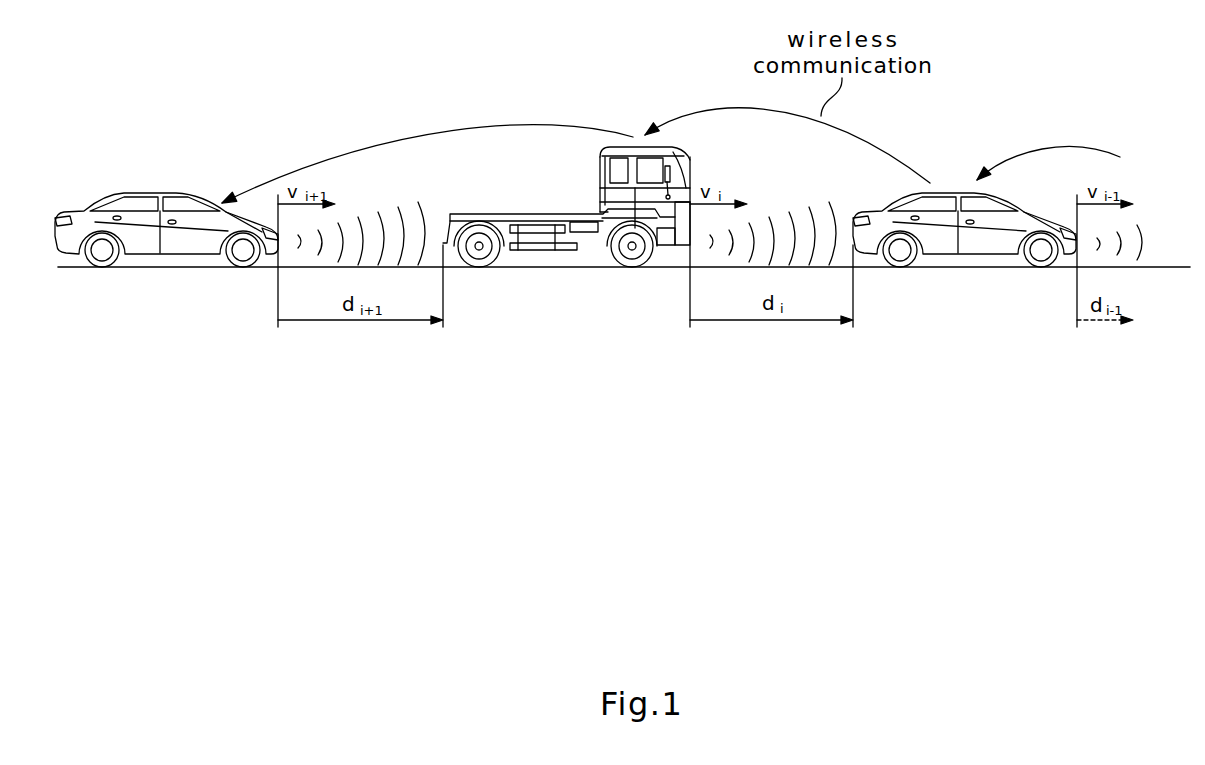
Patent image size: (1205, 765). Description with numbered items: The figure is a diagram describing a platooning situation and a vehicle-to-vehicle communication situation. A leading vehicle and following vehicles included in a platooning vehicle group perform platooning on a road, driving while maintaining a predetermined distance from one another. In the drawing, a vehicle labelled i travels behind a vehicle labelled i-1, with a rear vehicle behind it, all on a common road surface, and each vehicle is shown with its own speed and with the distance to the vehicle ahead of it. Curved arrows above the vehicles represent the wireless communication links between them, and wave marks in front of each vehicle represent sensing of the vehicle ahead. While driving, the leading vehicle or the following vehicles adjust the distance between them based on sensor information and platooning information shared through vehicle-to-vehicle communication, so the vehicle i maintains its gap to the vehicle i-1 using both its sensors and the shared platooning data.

The host vehicle i (truck) i is at (566, 237).
The preceding vehicle i-1 is at (964, 260).